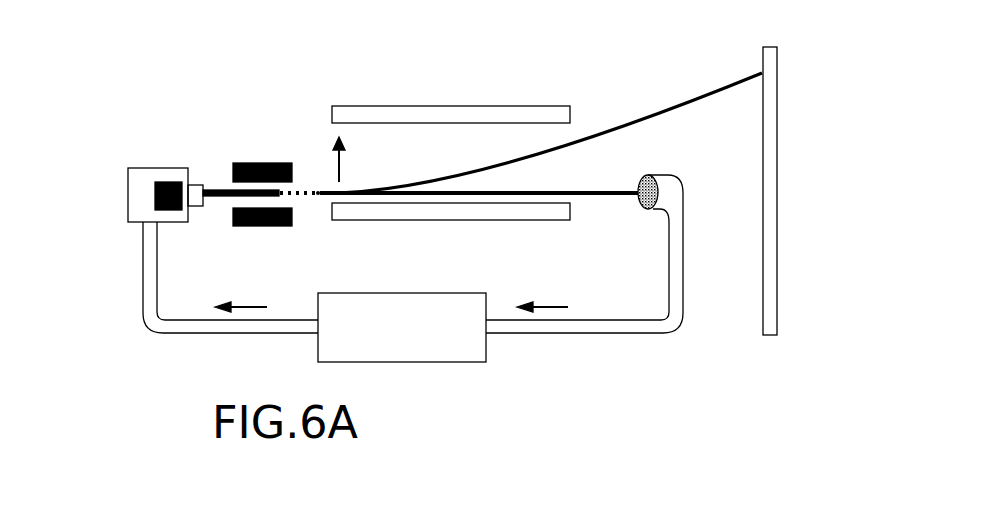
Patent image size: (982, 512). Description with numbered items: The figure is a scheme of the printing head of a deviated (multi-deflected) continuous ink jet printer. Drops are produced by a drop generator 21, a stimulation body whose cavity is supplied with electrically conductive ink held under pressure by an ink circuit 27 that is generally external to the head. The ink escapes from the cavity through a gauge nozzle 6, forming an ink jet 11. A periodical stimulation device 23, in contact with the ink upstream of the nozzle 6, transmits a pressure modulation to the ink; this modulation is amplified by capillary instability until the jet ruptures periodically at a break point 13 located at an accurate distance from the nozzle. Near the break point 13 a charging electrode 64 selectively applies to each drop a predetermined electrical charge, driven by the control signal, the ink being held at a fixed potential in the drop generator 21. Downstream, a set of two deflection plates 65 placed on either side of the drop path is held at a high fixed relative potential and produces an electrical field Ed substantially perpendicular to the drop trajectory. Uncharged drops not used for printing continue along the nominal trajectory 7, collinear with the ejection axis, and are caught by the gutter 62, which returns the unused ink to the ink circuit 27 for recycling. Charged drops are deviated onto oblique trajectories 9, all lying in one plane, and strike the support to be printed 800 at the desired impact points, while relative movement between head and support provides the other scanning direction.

The drop generator 21 is at (126, 193).
The periodical stimulation device 23 is at (167, 190).
The gauge nozzle 6 is at (204, 189).
The break point 13 is at (305, 188).
The ink jet 11 is at (318, 193).
The charging electrode 64 is at (268, 212).
The deflection plates 65 is at (395, 113).
The electrical field Ed is at (340, 166).
The nominal trajectory 7 is at (602, 196).
The oblique trajectories 9 is at (708, 95).
The gutter 62 is at (668, 192).
The ink circuit 27 is at (468, 352).
The support to be printed 800 is at (770, 110).